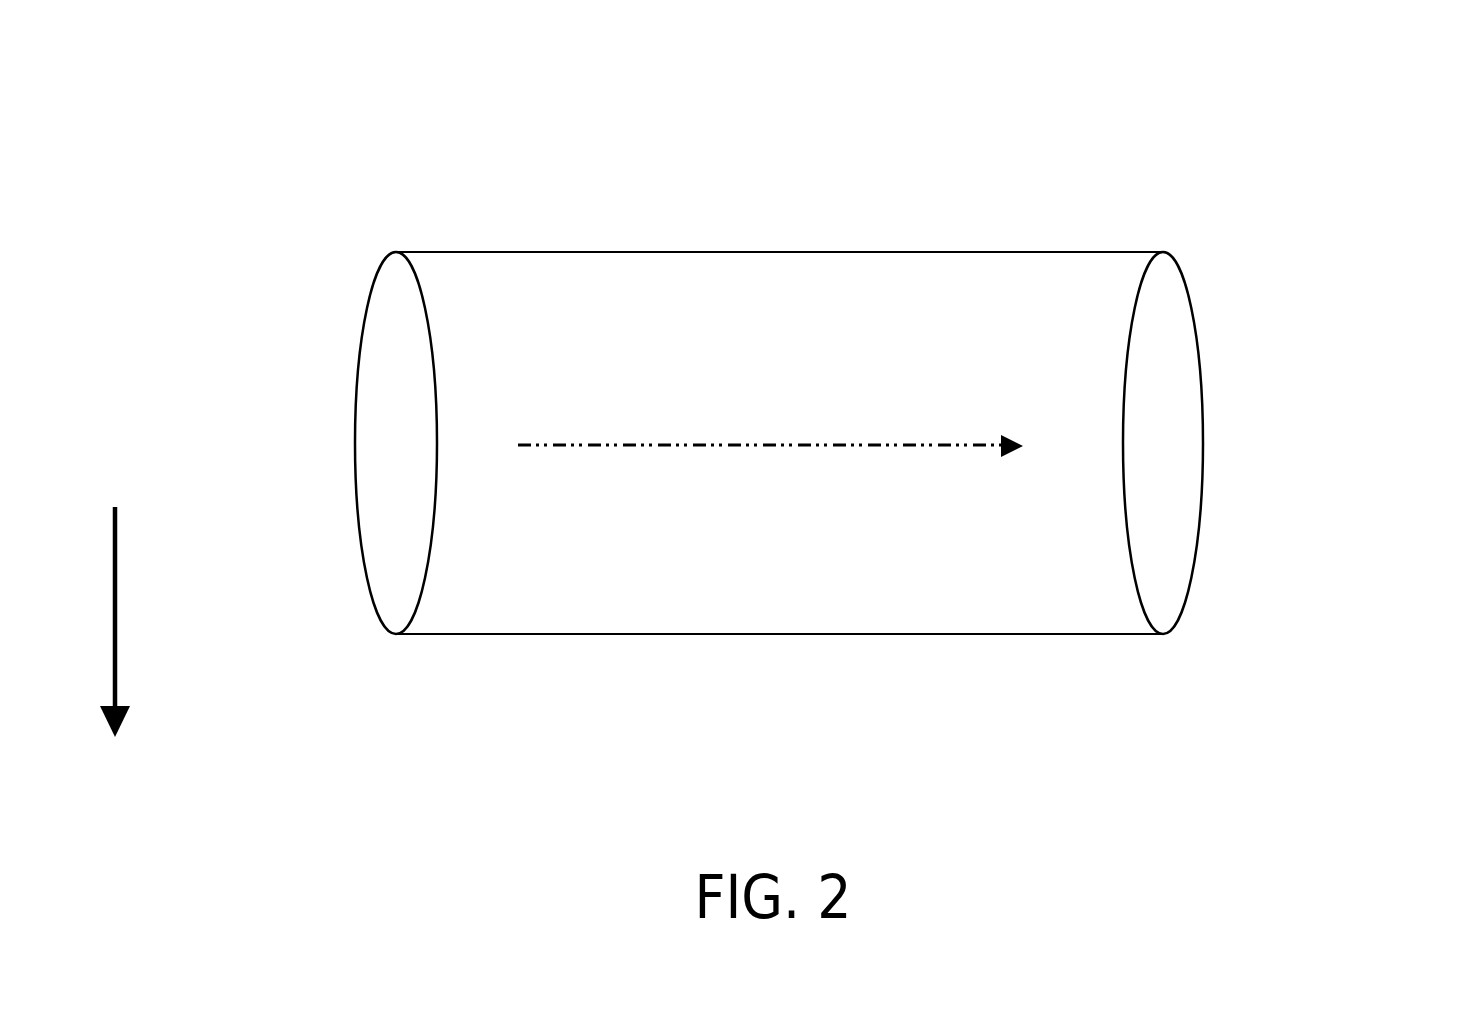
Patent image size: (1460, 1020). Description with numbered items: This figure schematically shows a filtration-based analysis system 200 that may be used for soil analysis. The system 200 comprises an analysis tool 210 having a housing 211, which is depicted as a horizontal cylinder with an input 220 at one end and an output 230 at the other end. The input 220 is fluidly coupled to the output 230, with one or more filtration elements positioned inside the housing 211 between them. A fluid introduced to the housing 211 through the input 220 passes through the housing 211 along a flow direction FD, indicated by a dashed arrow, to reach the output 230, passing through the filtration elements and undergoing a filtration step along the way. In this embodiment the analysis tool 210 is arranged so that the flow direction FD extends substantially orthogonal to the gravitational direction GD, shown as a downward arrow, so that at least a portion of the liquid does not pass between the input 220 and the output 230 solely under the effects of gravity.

The filtration-based analysis system 200 is at (222, 166).
The analysis tool 210 is at (634, 277).
The housing 211 is at (668, 583).
The input 220 is at (390, 462).
The output 230 is at (1183, 420).
The flow direction FD is at (888, 427).
The gravitational direction GD is at (120, 593).